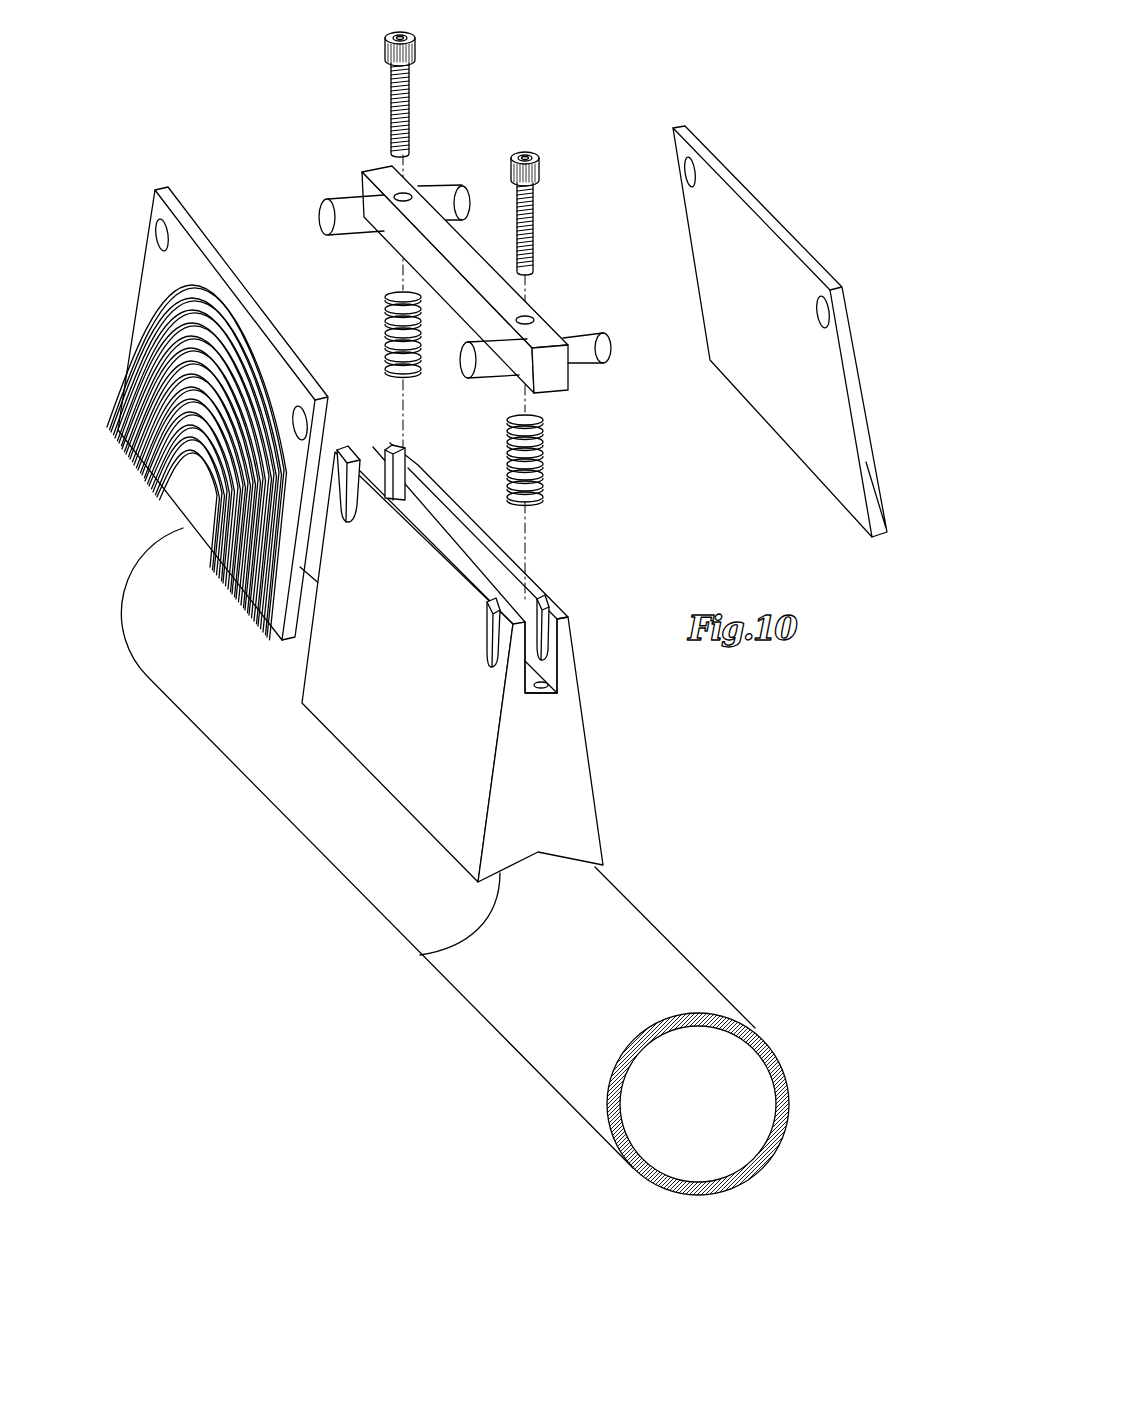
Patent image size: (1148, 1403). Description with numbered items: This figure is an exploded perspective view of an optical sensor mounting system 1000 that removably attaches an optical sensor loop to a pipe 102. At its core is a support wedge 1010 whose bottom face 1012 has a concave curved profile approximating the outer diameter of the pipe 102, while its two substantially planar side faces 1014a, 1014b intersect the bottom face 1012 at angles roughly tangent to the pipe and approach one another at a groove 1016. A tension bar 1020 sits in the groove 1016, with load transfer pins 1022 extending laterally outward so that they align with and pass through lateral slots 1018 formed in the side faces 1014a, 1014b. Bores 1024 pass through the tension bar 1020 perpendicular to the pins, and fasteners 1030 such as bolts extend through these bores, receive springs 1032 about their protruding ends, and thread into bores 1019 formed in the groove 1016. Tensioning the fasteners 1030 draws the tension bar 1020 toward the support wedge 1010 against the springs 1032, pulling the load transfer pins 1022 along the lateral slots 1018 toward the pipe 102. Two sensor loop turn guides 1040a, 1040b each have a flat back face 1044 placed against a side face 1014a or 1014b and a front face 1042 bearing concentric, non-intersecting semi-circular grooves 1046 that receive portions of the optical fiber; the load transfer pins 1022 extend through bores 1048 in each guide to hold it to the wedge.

The optical sensor mounting system 1000 is at (806, 173).
The pipe 102 is at (585, 966).
The support wedge 1010 is at (504, 643).
The bottom face 1012 is at (420, 955).
The side face 1014a is at (426, 688).
The side face 1014b is at (600, 763).
The groove 1016 is at (528, 626).
The lateral slots 1018 is at (408, 460).
The bores 1019 is at (391, 483).
The tension bar 1020 is at (478, 272).
The load transfer pins 1022 is at (342, 203).
The bores 1024 is at (405, 193).
The fasteners 1030 is at (420, 48).
The springs 1032 is at (385, 316).
The sensor loop turn guide 1040a is at (143, 250).
The sensor loop turn guide 1040b is at (752, 195).
The front face 1042 is at (162, 282).
The back face 1044 is at (218, 255).
The grooves 1046 is at (103, 437).
The bores 1048 is at (151, 218).